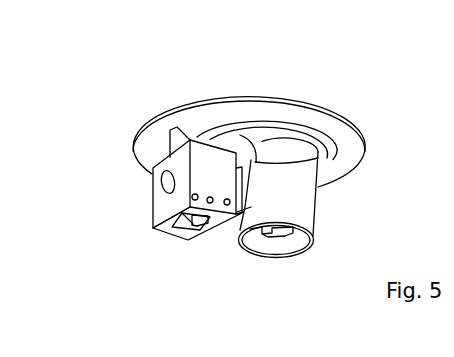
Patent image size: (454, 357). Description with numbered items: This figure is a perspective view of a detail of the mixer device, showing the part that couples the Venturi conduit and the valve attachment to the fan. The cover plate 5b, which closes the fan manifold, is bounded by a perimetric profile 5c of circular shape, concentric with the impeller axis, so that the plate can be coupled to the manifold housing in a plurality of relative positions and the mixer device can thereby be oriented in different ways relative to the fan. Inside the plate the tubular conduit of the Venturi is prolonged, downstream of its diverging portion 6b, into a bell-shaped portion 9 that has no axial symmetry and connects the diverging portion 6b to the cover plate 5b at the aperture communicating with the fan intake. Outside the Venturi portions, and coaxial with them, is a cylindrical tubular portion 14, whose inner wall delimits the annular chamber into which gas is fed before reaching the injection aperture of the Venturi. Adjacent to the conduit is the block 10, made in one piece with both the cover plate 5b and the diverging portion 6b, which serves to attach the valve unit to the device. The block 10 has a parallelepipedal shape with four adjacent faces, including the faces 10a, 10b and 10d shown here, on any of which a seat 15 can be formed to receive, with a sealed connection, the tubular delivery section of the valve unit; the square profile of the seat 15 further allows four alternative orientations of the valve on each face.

The cover plate 5b is at (345, 160).
The perimetric profile 5c is at (336, 113).
The diverging portion 6b is at (283, 238).
The bell-shaped portion 9 is at (253, 148).
The block 10 is at (151, 224).
The face of the block 10a is at (163, 230).
The face of the block 10b is at (207, 140).
The face of the block 10d is at (162, 204).
The cylindrical tubular portion 14 is at (304, 211).
The seat 15 is at (197, 226).